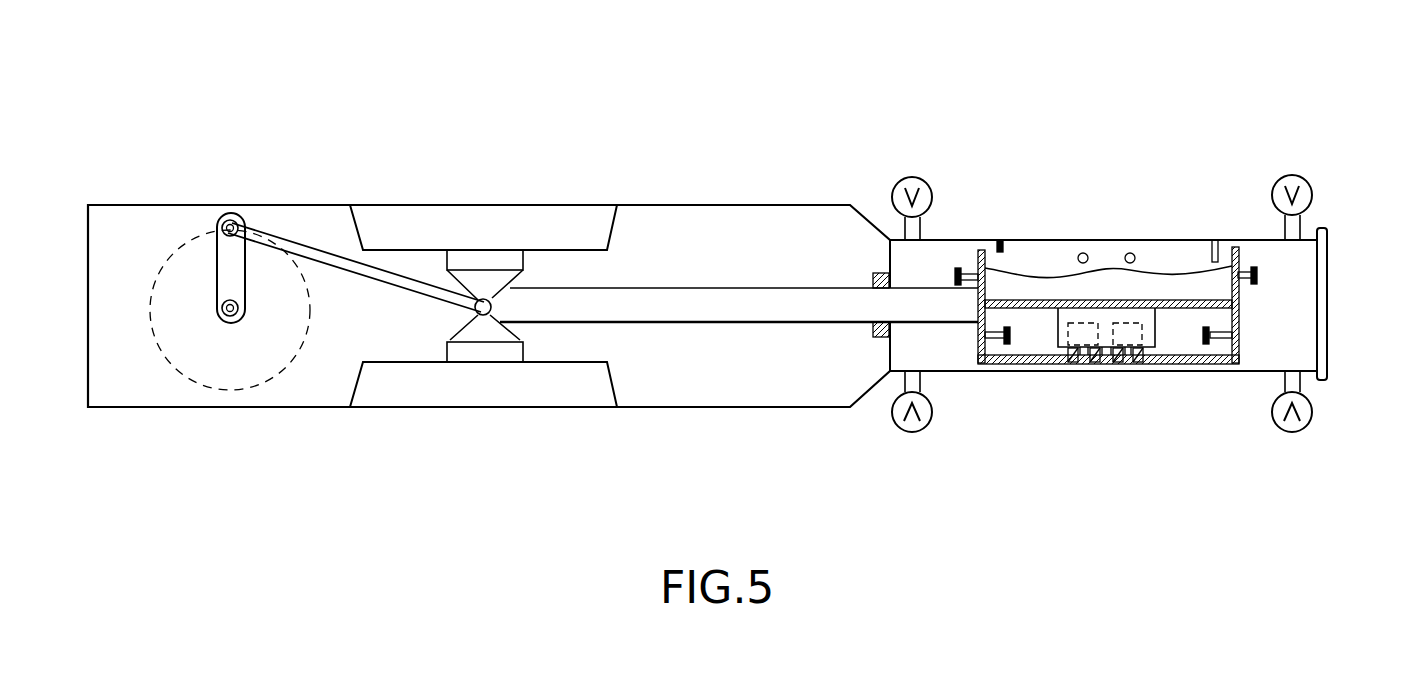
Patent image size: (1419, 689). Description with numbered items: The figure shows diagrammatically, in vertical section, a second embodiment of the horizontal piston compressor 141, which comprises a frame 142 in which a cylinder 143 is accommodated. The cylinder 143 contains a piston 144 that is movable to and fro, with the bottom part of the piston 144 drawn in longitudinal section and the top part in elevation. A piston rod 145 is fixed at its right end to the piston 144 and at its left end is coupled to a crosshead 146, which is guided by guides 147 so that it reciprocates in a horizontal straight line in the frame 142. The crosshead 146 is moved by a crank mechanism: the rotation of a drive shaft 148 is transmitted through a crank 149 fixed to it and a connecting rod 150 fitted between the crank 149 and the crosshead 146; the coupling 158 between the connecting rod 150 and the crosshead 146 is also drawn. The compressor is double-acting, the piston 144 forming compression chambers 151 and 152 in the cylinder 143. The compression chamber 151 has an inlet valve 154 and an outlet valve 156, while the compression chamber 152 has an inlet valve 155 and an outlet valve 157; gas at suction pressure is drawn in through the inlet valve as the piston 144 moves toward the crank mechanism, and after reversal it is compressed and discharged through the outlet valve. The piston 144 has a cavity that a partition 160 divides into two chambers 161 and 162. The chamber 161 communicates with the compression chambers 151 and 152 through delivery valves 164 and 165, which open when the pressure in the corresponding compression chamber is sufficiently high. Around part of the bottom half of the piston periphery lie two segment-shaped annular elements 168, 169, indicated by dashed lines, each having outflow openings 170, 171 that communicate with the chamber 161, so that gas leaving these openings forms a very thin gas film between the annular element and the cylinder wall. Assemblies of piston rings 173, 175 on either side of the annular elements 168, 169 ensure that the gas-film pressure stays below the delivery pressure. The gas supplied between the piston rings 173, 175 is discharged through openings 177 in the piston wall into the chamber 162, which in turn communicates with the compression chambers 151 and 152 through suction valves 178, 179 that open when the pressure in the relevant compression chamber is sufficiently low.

The horizontal piston compressor 141 is at (817, 126).
The frame 142 is at (690, 205).
The cylinder 143 is at (950, 240).
The piston 144 is at (1032, 258).
The piston rod 145 is at (752, 305).
The crosshead 146 is at (490, 262).
The guides 147 is at (590, 215).
The drive shaft 148 is at (229, 318).
The crank 149 is at (208, 267).
The connecting rod 150 is at (330, 255).
The compression chamber 151 is at (1306, 357).
The compression chamber 152 is at (945, 359).
The inlet valve 154 is at (1292, 174).
The inlet valve 155 is at (896, 186).
The outlet valve 156 is at (1285, 432).
The outlet valve 157 is at (905, 432).
The ball joint 158 is at (475, 311).
The partition 160 is at (1150, 300).
The chamber 161 is at (1187, 350).
The chamber 162 is at (1053, 278).
The delivery valve 164 is at (1215, 333).
The delivery valve 165 is at (1008, 340).
The segment-shaped annular element 168 is at (1072, 372).
The segment-shaped annular element 169 is at (1138, 372).
The outflow opening 170 is at (1082, 370).
The outflow opening 171 is at (1125, 372).
The piston rings 173 is at (1000, 243).
The piston rings 175 is at (1213, 242).
The openings 177 is at (1085, 252).
The suction valve 178 is at (1258, 275).
The suction valve 179 is at (955, 277).